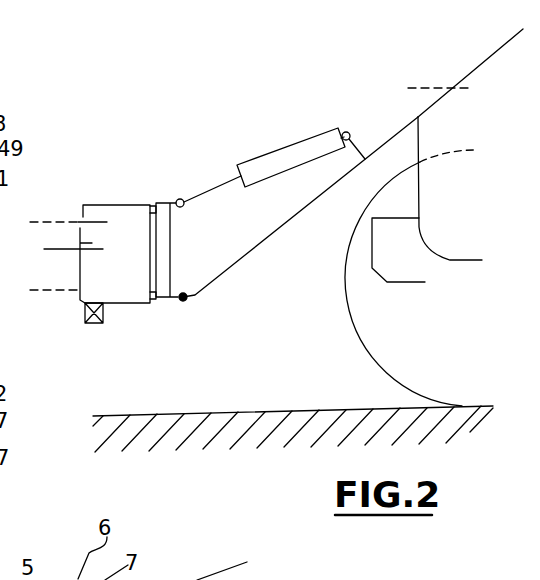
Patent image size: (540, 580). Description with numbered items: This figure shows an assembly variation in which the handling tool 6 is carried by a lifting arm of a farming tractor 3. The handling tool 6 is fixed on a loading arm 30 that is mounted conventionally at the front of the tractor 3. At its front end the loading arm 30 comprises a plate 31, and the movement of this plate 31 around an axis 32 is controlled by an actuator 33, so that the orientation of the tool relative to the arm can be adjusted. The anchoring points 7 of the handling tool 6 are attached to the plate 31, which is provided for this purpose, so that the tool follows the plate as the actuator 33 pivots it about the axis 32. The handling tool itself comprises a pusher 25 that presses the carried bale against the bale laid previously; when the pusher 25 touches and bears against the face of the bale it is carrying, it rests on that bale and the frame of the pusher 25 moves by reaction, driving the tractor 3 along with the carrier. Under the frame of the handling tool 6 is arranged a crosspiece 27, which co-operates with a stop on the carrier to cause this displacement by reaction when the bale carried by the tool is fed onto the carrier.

The tractor 3 is at (414, 114).
The handling tool 6 is at (88, 196).
The anchoring points 7 is at (158, 202).
The pusher 25 is at (66, 245).
The crosspiece 27 is at (107, 323).
The loading arm 30 is at (487, 60).
The plate 31 is at (170, 240).
The axis 32 is at (186, 300).
The actuator 33 is at (293, 151).